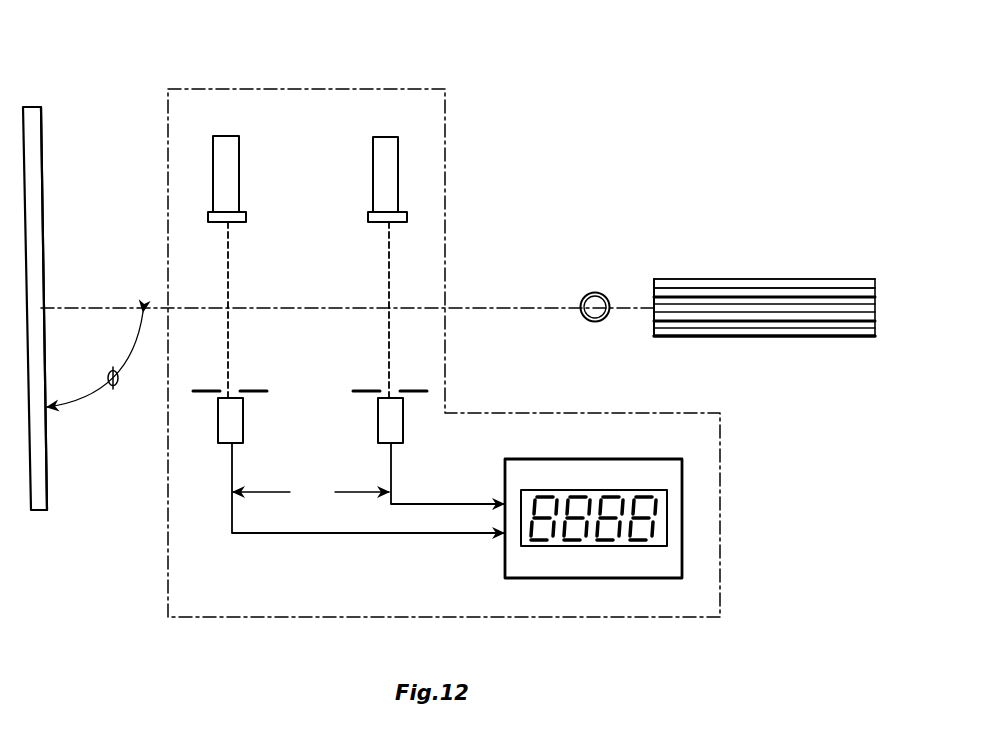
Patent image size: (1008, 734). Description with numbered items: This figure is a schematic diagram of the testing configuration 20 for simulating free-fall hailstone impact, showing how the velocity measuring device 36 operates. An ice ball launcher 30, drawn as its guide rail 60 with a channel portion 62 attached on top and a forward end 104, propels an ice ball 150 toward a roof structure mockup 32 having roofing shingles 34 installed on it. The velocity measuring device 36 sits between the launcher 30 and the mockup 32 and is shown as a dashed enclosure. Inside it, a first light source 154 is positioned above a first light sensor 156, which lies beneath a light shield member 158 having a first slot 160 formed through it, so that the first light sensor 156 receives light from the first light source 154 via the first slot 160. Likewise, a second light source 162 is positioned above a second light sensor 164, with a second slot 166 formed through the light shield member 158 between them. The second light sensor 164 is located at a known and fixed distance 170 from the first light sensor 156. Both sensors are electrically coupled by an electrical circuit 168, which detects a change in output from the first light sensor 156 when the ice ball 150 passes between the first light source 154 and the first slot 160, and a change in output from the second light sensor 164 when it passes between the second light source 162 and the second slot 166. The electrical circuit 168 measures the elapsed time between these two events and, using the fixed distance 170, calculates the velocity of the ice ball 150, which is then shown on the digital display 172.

The testing configuration 20 is at (531, 181).
The ice ball launcher 30 is at (806, 269).
The roof structure mockup 32 is at (49, 519).
The roofing shingles 34 is at (47, 478).
The velocity measuring device 36 is at (550, 617).
The guide rail 60 is at (668, 279).
The channel portion 62 is at (717, 290).
The forward end of the rail 104 is at (679, 341).
The ice ball 150 is at (595, 292).
The first light source 154 is at (385, 145).
The first light sensor 156 is at (403, 428).
The light shield member 158 is at (213, 390).
The first slot 160 is at (398, 386).
The second light source 162 is at (227, 145).
The second light sensor 164 is at (243, 428).
The second slot 166 is at (238, 386).
The electrical circuit 168 is at (597, 459).
The fixed distance 170 is at (311, 492).
The digital display 172 is at (633, 546).